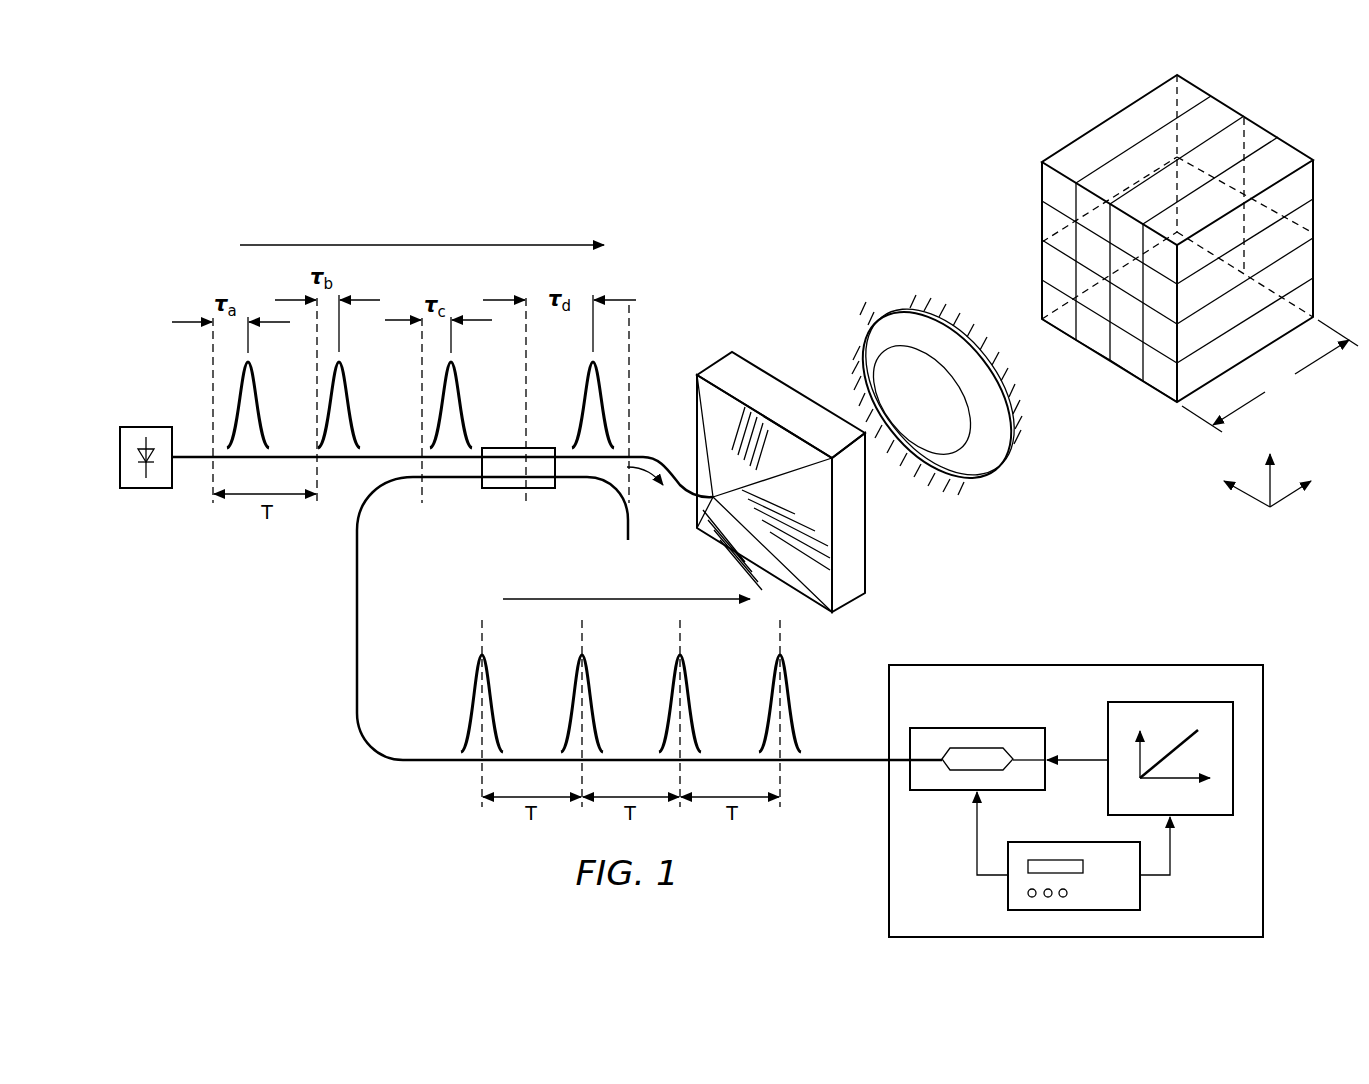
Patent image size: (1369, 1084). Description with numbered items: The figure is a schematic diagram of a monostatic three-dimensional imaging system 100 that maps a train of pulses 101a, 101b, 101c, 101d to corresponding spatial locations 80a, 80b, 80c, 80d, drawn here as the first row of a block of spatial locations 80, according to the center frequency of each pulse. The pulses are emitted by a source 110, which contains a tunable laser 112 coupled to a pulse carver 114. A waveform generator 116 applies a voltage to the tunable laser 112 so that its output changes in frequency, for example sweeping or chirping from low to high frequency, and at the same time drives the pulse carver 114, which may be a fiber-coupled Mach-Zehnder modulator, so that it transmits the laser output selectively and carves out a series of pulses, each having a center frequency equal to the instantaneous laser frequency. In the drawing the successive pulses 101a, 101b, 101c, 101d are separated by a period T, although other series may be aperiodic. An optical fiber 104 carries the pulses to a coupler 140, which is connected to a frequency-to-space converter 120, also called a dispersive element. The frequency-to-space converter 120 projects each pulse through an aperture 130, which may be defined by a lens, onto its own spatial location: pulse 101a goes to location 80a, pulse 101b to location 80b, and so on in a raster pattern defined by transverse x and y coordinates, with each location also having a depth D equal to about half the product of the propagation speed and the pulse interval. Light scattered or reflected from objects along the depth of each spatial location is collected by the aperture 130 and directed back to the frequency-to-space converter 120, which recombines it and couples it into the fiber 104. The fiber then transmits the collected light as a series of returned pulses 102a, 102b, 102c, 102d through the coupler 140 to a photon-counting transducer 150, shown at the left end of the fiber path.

The monostatic three-dimensional imaging system 100 is at (418, 191).
The spatial locations 80 is at (1013, 164).
The spatial location 80a is at (1058, 330).
The spatial location 80b is at (1090, 355).
The spatial location 80c is at (1127, 377).
The spatial location 80d is at (1155, 398).
The pulse 101a is at (472, 707).
The pulse 101b is at (575, 690).
The pulse 101c is at (688, 688).
The pulse 101d is at (790, 706).
The returned pulse 102a is at (256, 415).
The returned pulse 102b is at (347, 415).
The returned pulse 102c is at (459, 415).
The returned pulse 102d is at (600, 381).
The optical fiber 104 is at (355, 628).
The source 110 is at (1087, 660).
The tunable laser 112 is at (1203, 817).
The pulse carver 114 is at (986, 728).
The waveform generator 116 is at (1143, 893).
The frequency-to-space converter 120 is at (760, 383).
The aperture 130 is at (983, 461).
The coupler 140 is at (511, 488).
The photon-counting transducer 150 is at (145, 488).